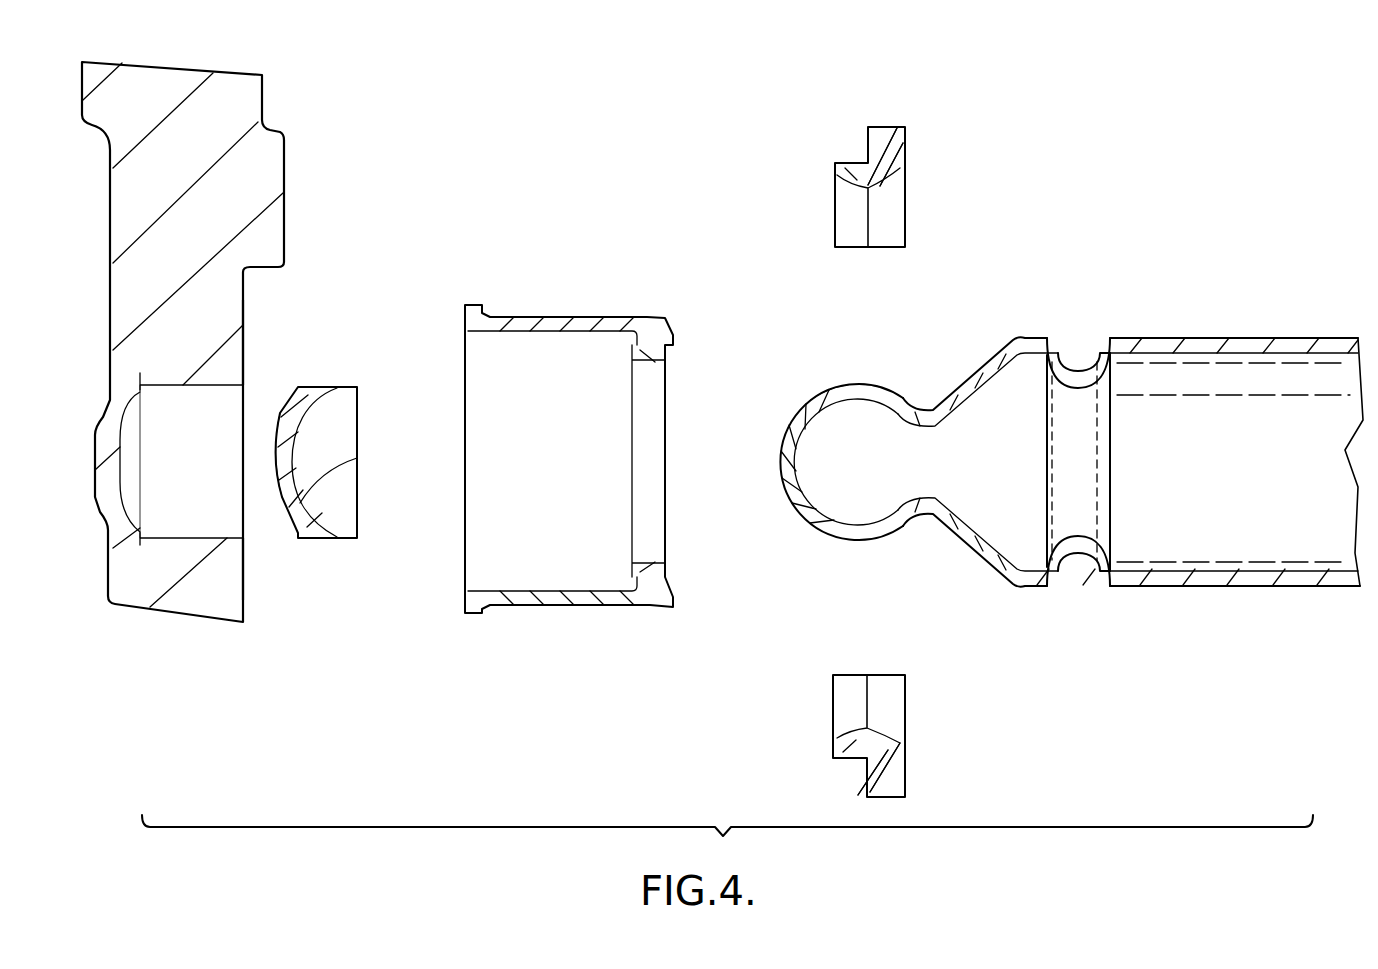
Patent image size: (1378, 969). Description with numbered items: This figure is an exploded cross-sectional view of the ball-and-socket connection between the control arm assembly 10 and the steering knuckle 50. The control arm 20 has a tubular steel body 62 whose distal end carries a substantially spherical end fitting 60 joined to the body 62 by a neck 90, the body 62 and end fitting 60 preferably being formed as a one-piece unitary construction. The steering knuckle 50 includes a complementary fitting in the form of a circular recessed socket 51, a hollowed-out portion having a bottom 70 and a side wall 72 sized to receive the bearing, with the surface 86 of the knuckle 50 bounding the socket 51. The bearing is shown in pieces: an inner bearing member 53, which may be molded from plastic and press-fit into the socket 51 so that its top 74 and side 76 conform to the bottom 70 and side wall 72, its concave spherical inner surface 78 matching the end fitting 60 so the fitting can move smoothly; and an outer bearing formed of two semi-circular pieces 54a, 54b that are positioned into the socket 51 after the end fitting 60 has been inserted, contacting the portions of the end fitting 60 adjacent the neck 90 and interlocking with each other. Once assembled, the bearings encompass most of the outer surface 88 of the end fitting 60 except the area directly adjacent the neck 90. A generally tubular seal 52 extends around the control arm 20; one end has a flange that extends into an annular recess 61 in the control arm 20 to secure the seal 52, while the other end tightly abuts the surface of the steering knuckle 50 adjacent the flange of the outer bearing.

The control arm assembly 10 is at (1026, 474).
The control arm 20 is at (1200, 458).
The steering knuckle 50 is at (284, 160).
The recessed socket 51 is at (185, 385).
The seal 52 is at (535, 605).
The inner bearing member 53 is at (317, 540).
The semi-circular outer bearing piece 54a is at (907, 193).
The semi-circular outer bearing piece 54b is at (907, 707).
The end fitting 60 is at (823, 383).
The annular recess 61 is at (1090, 612).
The tubular steel body 62 is at (1213, 587).
The socket bottom 70 is at (125, 468).
The socket side wall 72 is at (210, 533).
The top of inner bearing member 74 is at (273, 457).
The side of inner bearing member 76 is at (318, 385).
The inner surface of inner bearing 78 is at (357, 458).
The abutment face 86 is at (283, 575).
The outer surface of end fitting 88 is at (752, 449).
The neck 90 is at (923, 408).